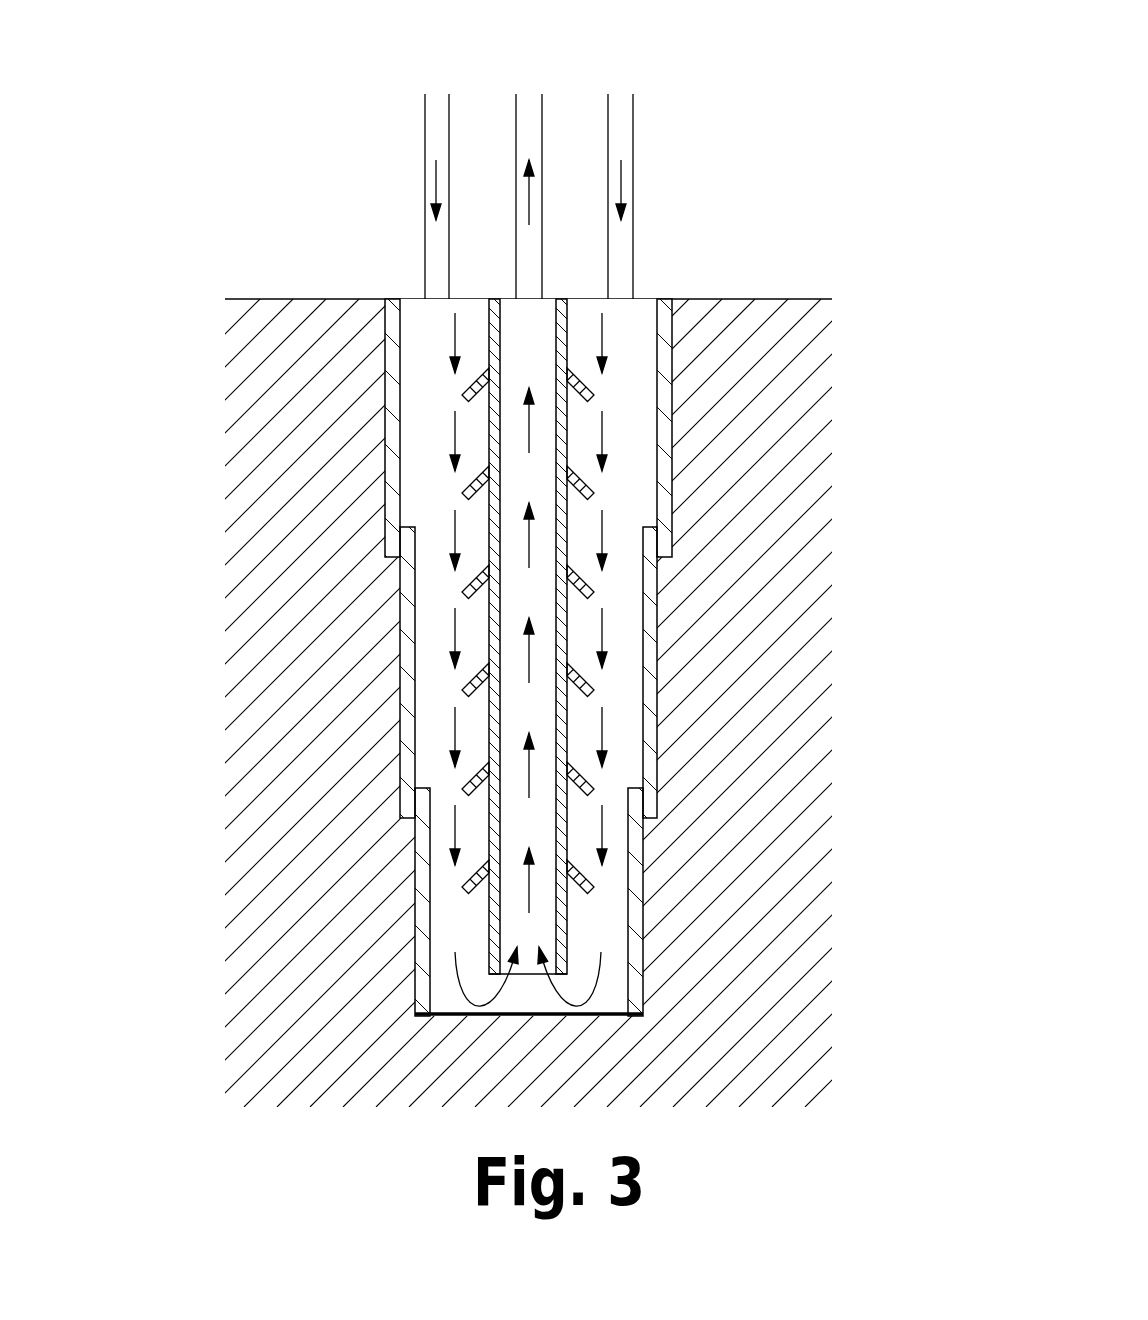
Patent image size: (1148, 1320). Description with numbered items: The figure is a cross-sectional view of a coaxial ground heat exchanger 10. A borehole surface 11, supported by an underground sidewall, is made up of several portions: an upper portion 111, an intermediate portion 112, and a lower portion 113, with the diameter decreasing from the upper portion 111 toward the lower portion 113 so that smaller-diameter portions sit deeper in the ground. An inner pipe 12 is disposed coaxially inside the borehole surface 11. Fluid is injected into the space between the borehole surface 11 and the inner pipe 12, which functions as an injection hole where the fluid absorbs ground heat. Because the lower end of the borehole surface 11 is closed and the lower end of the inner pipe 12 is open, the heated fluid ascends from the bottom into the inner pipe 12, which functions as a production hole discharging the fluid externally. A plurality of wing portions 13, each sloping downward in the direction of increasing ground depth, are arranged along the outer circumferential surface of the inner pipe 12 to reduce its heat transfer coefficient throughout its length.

The ground heat exchanger 10 is at (546, 26).
The borehole surface 11 is at (687, 657).
The portion 111 is at (672, 417).
The portion 112 is at (645, 665).
The portion 113 is at (666, 902).
The inner pipe 12 is at (568, 330).
The wing portion 13 is at (463, 493).